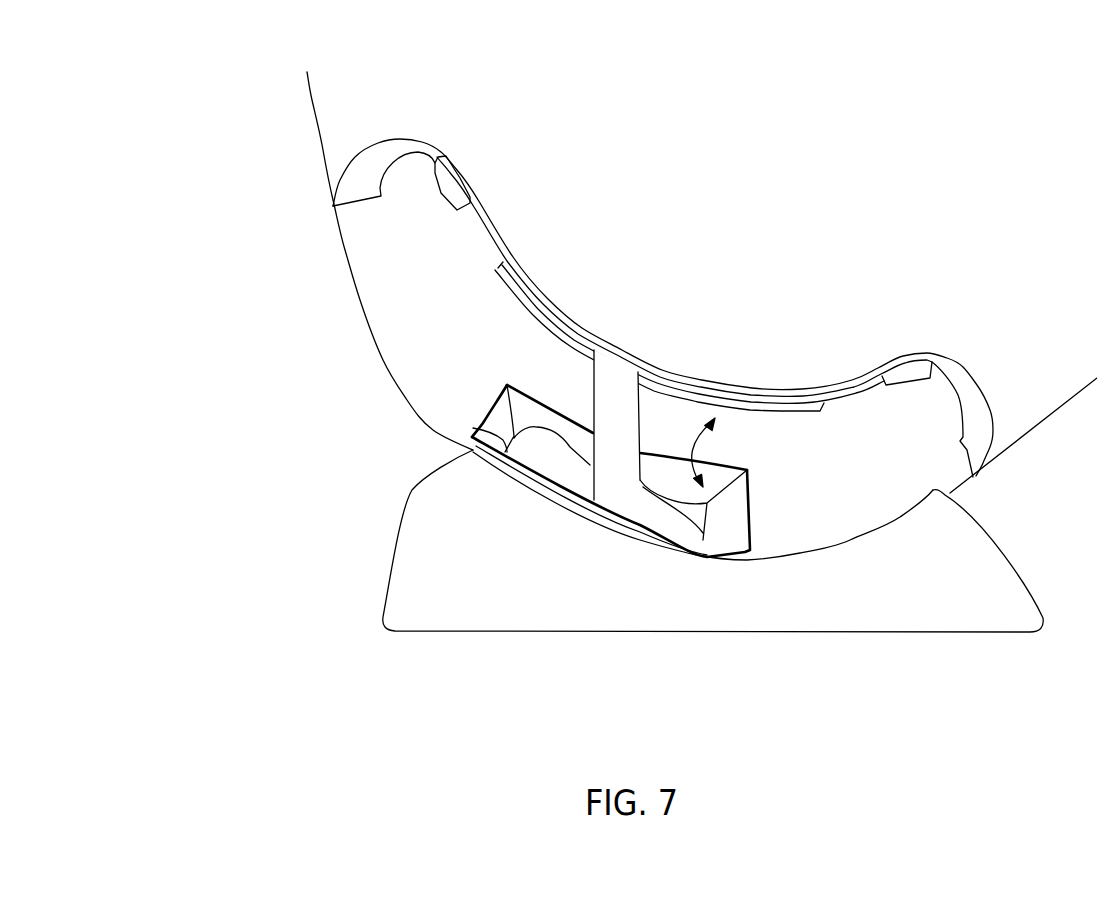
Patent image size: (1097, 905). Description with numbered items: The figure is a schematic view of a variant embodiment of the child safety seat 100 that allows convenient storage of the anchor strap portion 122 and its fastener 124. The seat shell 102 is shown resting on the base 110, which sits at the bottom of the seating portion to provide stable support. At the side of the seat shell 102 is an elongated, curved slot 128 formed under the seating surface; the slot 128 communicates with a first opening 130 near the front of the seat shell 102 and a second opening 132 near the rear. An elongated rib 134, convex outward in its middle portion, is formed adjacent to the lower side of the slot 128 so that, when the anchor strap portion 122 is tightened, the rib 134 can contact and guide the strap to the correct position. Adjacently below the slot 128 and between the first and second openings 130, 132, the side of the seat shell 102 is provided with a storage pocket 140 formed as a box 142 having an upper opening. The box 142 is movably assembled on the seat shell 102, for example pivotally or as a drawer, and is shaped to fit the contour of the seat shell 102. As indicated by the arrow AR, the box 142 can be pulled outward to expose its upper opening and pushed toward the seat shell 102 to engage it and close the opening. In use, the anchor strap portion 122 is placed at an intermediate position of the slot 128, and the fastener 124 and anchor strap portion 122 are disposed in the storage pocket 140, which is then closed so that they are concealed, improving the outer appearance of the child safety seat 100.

The child safety seat 100 is at (106, 41).
The seat shell 102 is at (718, 284).
The base 110 is at (746, 614).
The anchor strap portion 122 is at (649, 522).
The fastener 124 is at (473, 429).
The slot 128 is at (562, 320).
The first opening 130 is at (938, 400).
The second opening 132 is at (428, 200).
The elongated rib 134 is at (703, 400).
The storage pocket 140 is at (490, 394).
The box 142 is at (580, 507).
The arrow AR is at (685, 452).